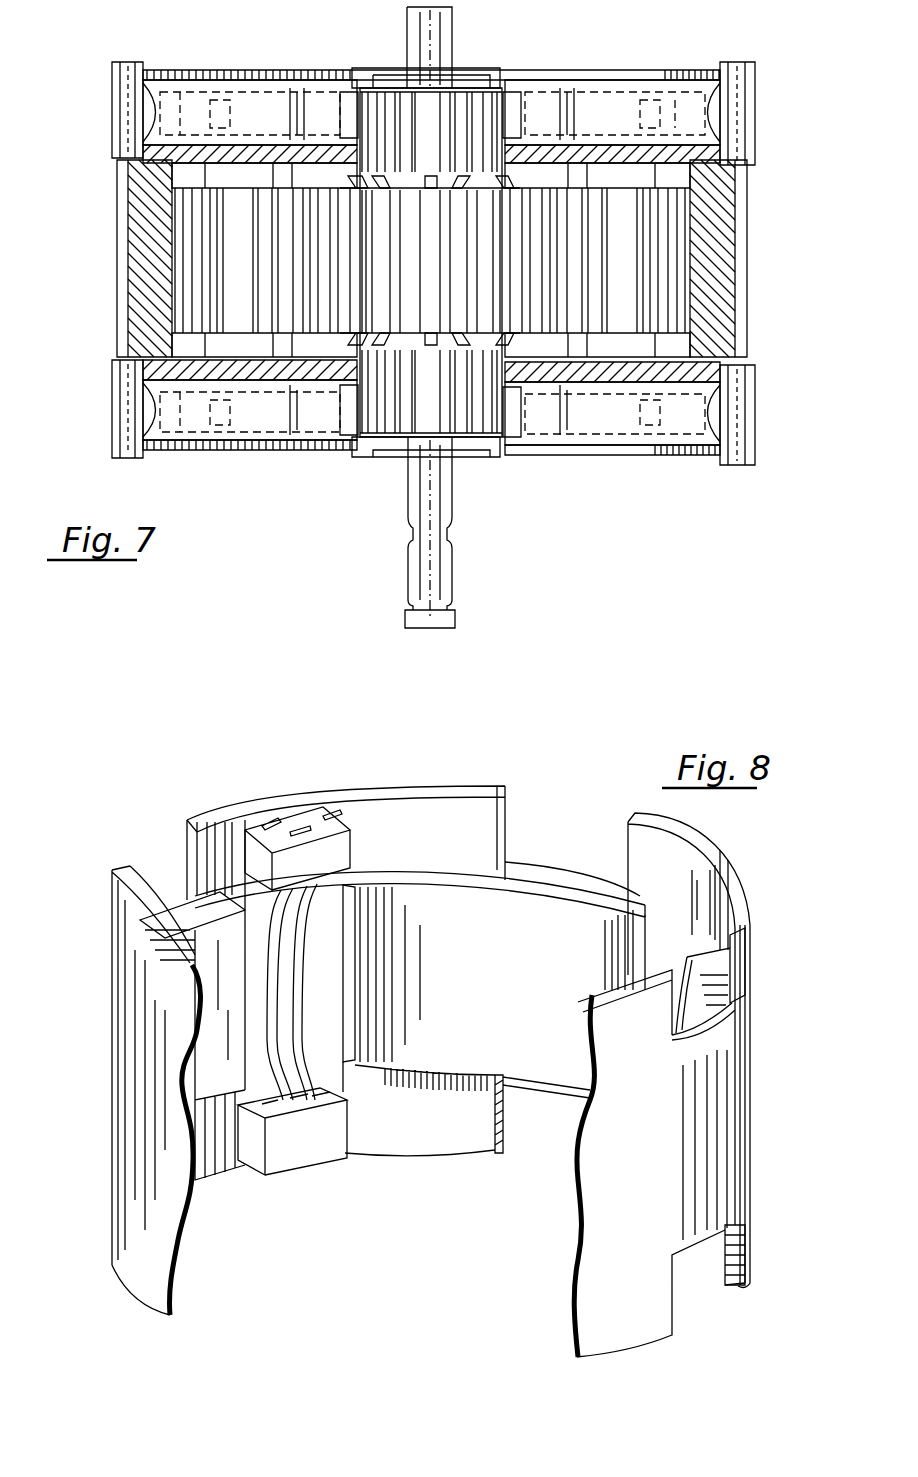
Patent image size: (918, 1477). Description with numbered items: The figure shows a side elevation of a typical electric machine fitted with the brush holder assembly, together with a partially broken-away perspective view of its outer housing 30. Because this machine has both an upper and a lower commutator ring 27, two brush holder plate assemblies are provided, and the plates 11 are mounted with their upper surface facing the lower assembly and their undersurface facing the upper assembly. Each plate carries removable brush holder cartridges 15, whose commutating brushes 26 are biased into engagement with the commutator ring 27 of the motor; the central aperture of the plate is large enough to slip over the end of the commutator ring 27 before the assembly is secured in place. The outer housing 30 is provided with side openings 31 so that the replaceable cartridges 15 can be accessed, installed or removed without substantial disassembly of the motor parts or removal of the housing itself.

In FIG. 7, the plate 11 is at (260, 148).
In FIG. 7, the removable brush holder cartridge 15 is at (297, 110).
In FIG. 7, the commutating brush 26 is at (367, 93).
In FIG. 7, the commutator ring 27 is at (462, 93).
In FIG. 7, the outer housing 30 is at (117, 278).
In FIG. 8, the outer housing 30 is at (709, 848).
In FIG. 7, the opening 31 is at (113, 101).
In FIG. 8, the opening 31 is at (190, 843).